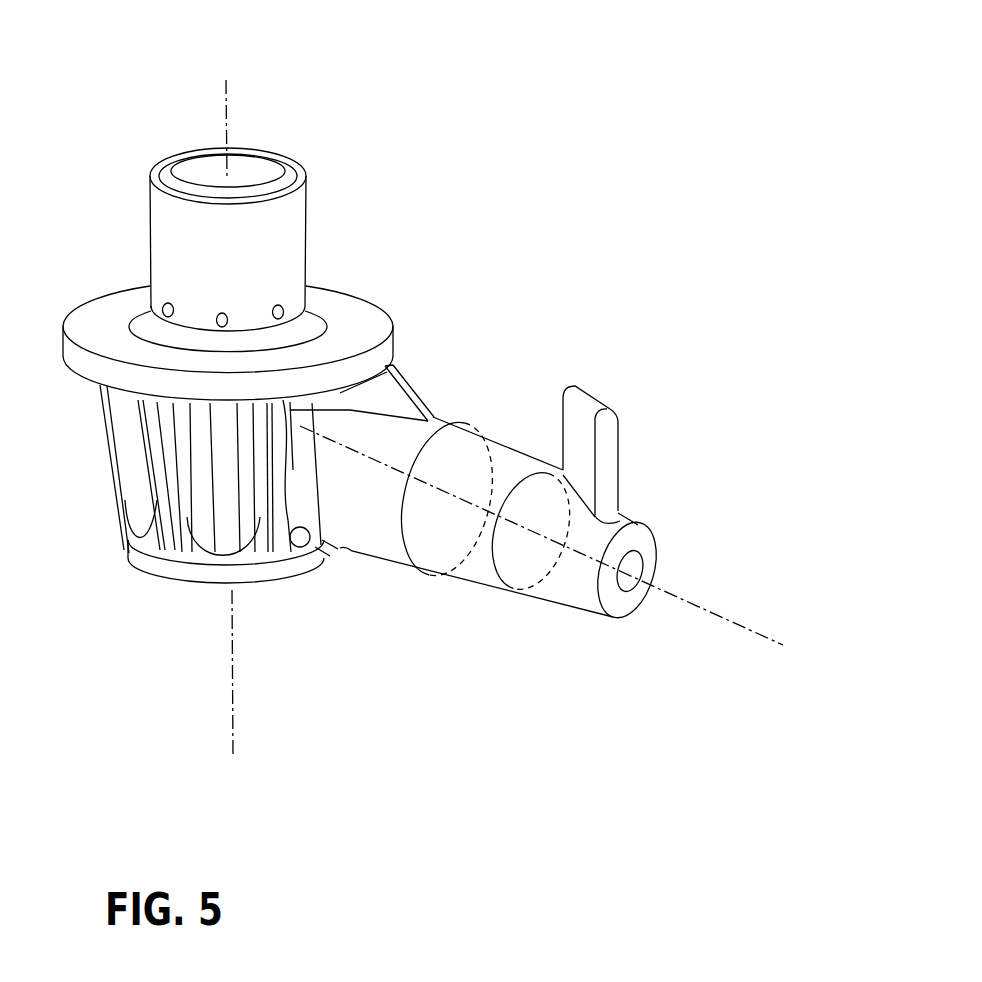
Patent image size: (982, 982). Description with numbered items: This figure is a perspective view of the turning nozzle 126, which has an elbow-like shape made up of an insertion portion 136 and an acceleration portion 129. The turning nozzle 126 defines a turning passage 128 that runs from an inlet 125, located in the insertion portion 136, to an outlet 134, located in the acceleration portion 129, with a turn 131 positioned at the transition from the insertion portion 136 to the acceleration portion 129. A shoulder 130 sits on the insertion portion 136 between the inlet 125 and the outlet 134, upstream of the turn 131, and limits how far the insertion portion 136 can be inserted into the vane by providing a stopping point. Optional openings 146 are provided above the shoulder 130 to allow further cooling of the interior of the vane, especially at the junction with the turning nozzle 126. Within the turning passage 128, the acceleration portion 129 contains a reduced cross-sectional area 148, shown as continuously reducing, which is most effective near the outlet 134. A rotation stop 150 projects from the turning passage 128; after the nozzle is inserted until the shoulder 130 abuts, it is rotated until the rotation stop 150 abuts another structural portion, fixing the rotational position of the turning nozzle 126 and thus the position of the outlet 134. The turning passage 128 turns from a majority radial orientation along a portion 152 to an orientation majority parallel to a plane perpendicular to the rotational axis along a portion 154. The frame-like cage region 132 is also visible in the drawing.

The inlet 125 is at (258, 170).
The turning nozzle 126 is at (496, 328).
The turning passage 128 is at (205, 165).
The acceleration portion 129 is at (367, 557).
The shoulder 130 is at (113, 377).
The turn 131 is at (231, 455).
The cage 132 is at (158, 537).
The outlet 134 is at (633, 572).
The insertion portion 136 is at (307, 215).
The openings 146 is at (283, 313).
The reduced cross-sectional area 148 is at (631, 573).
The rotation stop 150 is at (607, 447).
The portion 152 is at (227, 97).
The portion 154 is at (727, 617).